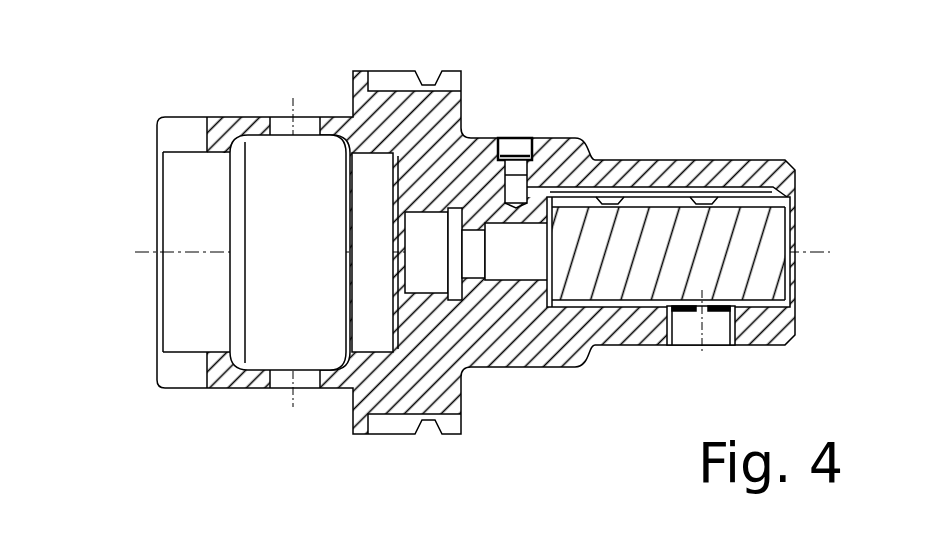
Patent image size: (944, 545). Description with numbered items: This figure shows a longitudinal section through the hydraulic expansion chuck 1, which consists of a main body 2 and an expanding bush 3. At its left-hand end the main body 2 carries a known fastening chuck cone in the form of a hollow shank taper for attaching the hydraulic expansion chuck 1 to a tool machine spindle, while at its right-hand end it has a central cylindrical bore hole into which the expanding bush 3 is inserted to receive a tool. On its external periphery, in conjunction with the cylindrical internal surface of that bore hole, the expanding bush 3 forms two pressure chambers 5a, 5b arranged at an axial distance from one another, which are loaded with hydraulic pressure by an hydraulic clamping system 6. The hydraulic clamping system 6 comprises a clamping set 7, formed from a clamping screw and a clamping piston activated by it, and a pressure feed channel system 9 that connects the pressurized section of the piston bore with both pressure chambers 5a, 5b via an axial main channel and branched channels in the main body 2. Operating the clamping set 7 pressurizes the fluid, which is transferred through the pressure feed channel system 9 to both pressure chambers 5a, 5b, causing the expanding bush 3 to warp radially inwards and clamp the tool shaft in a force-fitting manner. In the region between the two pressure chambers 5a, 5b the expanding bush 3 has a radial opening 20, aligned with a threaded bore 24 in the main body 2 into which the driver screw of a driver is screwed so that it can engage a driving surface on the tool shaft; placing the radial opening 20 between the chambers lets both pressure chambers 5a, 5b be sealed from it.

The hydraulic expansion chuck 1 is at (122, 376).
The main body 2 is at (350, 418).
The expanding bush 3 is at (786, 216).
The pressure chamber 5a is at (605, 302).
The pressure chamber 5b is at (785, 340).
The hydraulic clamping system 6 is at (572, 158).
The clamping set 7 is at (485, 158).
The pressure feed channel system 9 is at (672, 158).
The radial opening 20 is at (692, 305).
The threaded bore 24 is at (727, 345).